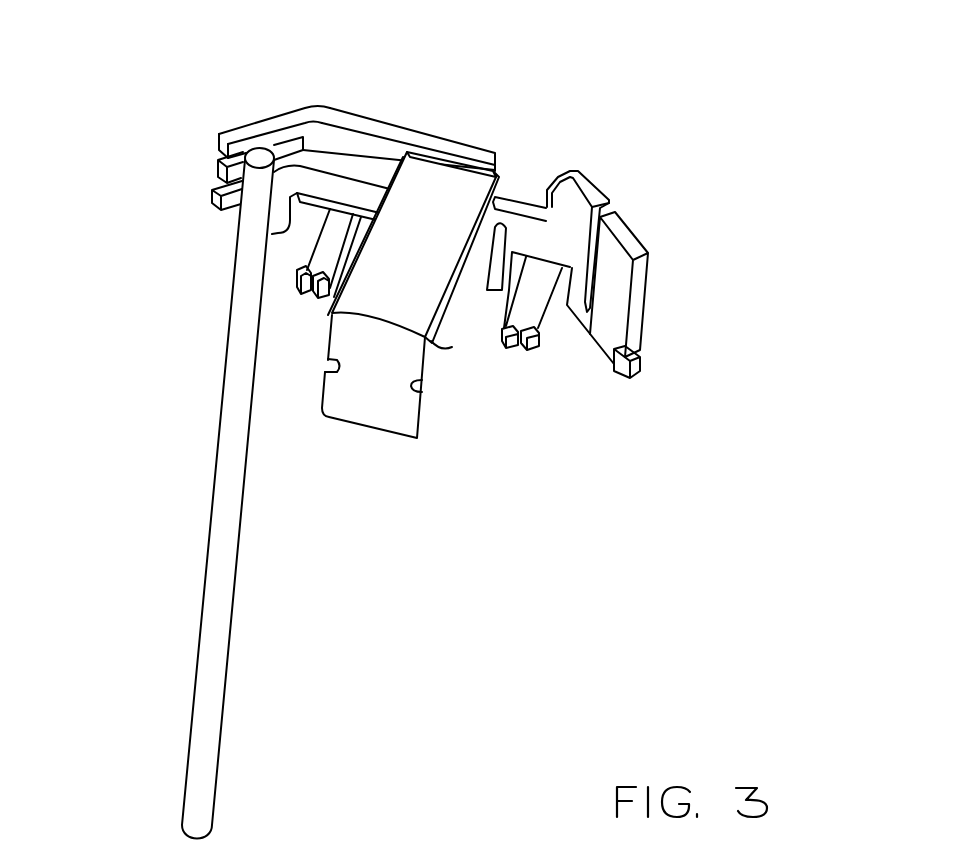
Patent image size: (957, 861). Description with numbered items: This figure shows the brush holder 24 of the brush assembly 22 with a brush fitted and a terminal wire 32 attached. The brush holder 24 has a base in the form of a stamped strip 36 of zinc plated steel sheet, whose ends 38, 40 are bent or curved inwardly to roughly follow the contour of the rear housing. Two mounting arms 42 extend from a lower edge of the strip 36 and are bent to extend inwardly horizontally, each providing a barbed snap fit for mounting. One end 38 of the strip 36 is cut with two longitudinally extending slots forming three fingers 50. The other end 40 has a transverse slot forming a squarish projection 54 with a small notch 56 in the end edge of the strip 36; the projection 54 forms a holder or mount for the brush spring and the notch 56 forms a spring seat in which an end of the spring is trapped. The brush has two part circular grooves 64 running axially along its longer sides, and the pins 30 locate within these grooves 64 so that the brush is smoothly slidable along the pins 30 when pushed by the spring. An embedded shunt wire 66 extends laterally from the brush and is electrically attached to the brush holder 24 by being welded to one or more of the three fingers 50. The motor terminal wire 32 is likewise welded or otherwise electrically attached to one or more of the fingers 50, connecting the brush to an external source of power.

The brush assembly 22 is at (682, 84).
The brush holder 24 is at (590, 182).
The pins 30 is at (457, 323).
The terminal wire 32 is at (228, 425).
The strip 36 is at (380, 162).
The end 38 is at (248, 132).
The end 40 is at (628, 238).
The mounting arms 42 is at (327, 256).
The fingers 50 is at (212, 199).
The projection 54 is at (613, 297).
The notch 56 is at (638, 370).
The grooves 64 is at (415, 387).
The shunt wire 66 is at (342, 183).